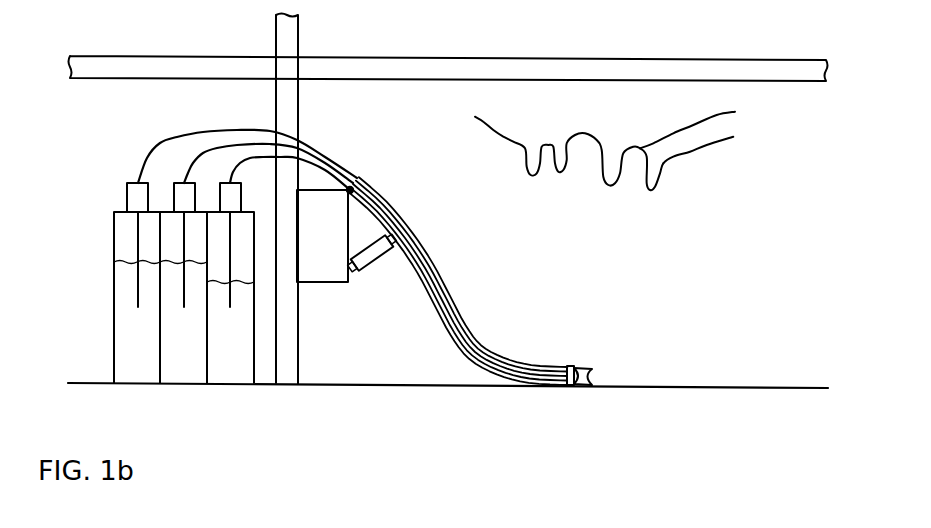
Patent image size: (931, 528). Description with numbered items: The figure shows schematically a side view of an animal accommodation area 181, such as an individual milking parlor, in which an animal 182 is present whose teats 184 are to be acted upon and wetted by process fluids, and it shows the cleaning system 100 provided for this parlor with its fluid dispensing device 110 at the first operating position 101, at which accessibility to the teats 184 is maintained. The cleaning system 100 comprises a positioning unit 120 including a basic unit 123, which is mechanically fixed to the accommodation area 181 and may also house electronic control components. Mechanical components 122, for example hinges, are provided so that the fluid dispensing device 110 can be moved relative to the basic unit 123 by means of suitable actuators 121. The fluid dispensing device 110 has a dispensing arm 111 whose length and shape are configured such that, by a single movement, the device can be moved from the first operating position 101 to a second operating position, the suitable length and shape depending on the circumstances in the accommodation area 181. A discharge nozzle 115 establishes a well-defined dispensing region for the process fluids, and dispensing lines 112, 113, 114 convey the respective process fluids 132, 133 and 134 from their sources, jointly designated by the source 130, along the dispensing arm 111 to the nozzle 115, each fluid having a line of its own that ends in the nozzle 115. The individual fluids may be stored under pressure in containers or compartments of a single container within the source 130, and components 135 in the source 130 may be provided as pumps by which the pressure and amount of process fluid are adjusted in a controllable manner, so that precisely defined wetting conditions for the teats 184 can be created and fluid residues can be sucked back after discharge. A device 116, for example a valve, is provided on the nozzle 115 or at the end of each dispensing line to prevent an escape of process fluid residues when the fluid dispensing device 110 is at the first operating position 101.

The cleaning system 100 is at (319, 139).
The first operating position 101 is at (457, 304).
The fluid dispensing device 110 is at (501, 287).
The dispensing arm 111 is at (444, 270).
The dispensing line 112 is at (478, 356).
The dispensing line 113 is at (538, 374).
The dispensing line 114 is at (457, 304).
The discharge nozzle 115 is at (595, 376).
The device 116 is at (572, 365).
The positioning unit 120 is at (324, 270).
The actuators 121 is at (371, 266).
The mechanical components 122 is at (351, 188).
The basic unit 123 is at (340, 248).
The sources 130 is at (167, 254).
The first process fluid 132 is at (246, 349).
The second process fluid 133 is at (199, 349).
The process fluid 134 is at (153, 349).
The components 135 is at (176, 174).
The animal accommodation area 181 is at (708, 55).
The animal 182 is at (643, 181).
The teats 184 is at (664, 196).